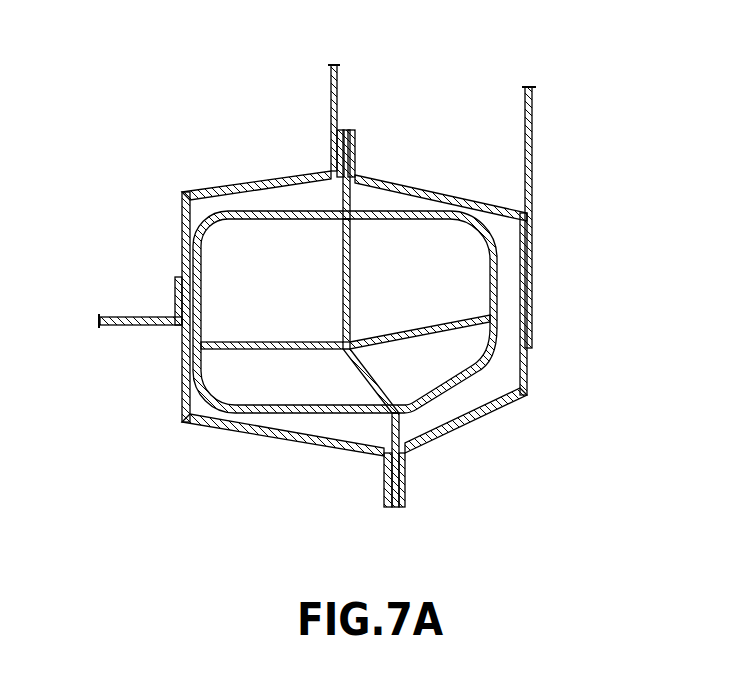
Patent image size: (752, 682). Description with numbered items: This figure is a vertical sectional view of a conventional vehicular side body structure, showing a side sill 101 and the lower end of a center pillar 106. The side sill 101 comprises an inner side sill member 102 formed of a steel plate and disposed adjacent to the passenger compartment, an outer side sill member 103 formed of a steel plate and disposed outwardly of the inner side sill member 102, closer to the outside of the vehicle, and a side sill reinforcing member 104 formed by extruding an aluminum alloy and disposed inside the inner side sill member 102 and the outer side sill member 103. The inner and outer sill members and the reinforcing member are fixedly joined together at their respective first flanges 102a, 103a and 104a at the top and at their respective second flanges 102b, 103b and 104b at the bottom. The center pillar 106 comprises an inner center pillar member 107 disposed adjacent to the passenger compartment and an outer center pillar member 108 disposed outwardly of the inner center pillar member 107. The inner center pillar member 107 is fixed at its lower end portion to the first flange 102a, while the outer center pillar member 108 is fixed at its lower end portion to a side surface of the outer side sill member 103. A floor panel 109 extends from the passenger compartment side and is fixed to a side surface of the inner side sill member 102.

The side sill 101 is at (208, 165).
The inner side sill member 102 is at (183, 215).
The first flange 102a is at (340, 128).
The second flange 102b is at (385, 492).
The outer side sill member 103 is at (462, 200).
The first flange 103a is at (357, 148).
The second flange 103b is at (406, 487).
The side sill reinforcing member 104 is at (307, 416).
The first flange 104a is at (346, 128).
The second flange 104b is at (396, 512).
The center pillar 106 is at (540, 113).
The inner center pillar member 107 is at (331, 92).
The outer center pillar member 108 is at (534, 148).
The floor panel 109 is at (142, 326).